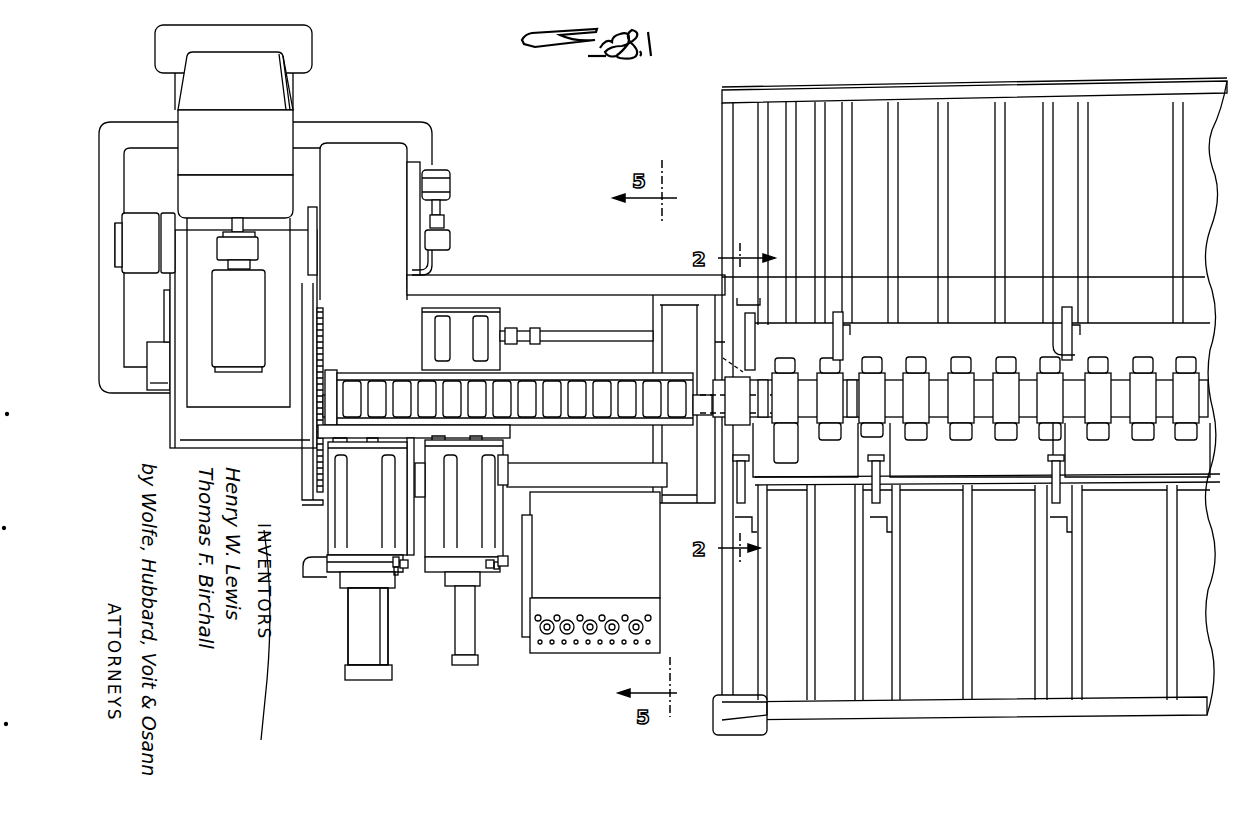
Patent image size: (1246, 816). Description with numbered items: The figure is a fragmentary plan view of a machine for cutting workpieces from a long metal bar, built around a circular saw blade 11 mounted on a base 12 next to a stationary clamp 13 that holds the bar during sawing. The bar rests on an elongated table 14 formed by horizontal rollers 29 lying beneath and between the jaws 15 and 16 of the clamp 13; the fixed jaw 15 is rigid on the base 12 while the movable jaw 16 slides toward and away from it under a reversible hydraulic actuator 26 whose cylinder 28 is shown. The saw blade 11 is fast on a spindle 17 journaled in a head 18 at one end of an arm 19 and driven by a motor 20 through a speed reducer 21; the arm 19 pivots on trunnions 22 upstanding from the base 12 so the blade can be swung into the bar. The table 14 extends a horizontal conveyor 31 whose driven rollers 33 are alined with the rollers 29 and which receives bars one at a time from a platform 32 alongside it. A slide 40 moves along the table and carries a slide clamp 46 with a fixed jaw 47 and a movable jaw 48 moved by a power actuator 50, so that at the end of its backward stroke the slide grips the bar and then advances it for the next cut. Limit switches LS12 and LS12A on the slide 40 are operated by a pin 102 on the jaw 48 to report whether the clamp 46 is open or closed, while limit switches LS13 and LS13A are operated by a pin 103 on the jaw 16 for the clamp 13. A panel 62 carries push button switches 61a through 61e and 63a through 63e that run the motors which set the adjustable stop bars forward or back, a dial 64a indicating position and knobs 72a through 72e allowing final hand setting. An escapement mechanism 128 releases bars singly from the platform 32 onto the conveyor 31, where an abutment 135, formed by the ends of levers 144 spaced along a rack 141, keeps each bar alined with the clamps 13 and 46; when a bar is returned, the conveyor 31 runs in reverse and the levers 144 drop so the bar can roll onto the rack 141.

The saw blade 11 is at (325, 336).
The base 12 is at (420, 142).
The stationary clamp 13 is at (410, 295).
The table 14 is at (553, 423).
The fixed jaw 15 is at (352, 376).
The movable jaw 16 is at (362, 448).
The spindle 17 is at (318, 415).
The head 18 is at (185, 440).
The arm 19 is at (192, 283).
The motor 20 is at (292, 117).
The speed reducer 21 is at (250, 358).
The trunnions 22 is at (141, 222).
The hydraulic actuator 26 is at (350, 622).
The cylinder 28 is at (362, 640).
The rollers 29 is at (592, 380).
The conveyor 31 is at (973, 357).
The platform 32 is at (1207, 615).
The rollers 33 is at (955, 423).
The slide 40 is at (497, 433).
The slide clamp 46 is at (502, 322).
The fixed jaw 47 is at (490, 372).
The movable jaw 48 is at (497, 455).
The power actuator 50 is at (452, 645).
The push button switch 61a is at (632, 645).
The push button switch 61e is at (541, 645).
The panel 62 is at (660, 618).
The push button switch 63a is at (645, 645).
The push button switch 63e is at (553, 645).
The dial 64a is at (636, 618).
The knob 72a is at (641, 630).
The knob 72e is at (543, 630).
The pin 102 is at (508, 562).
The pin 103 is at (406, 566).
The escapement mechanism 128 is at (750, 490).
The abutment 135 is at (1058, 364).
The rack 141 is at (975, 90).
The levers 144 is at (838, 335).
The limit switch LS12 is at (490, 570).
The limit switch LS12A is at (500, 591).
The limit switch LS13 is at (396, 568).
The limit switch LS13A is at (412, 595).